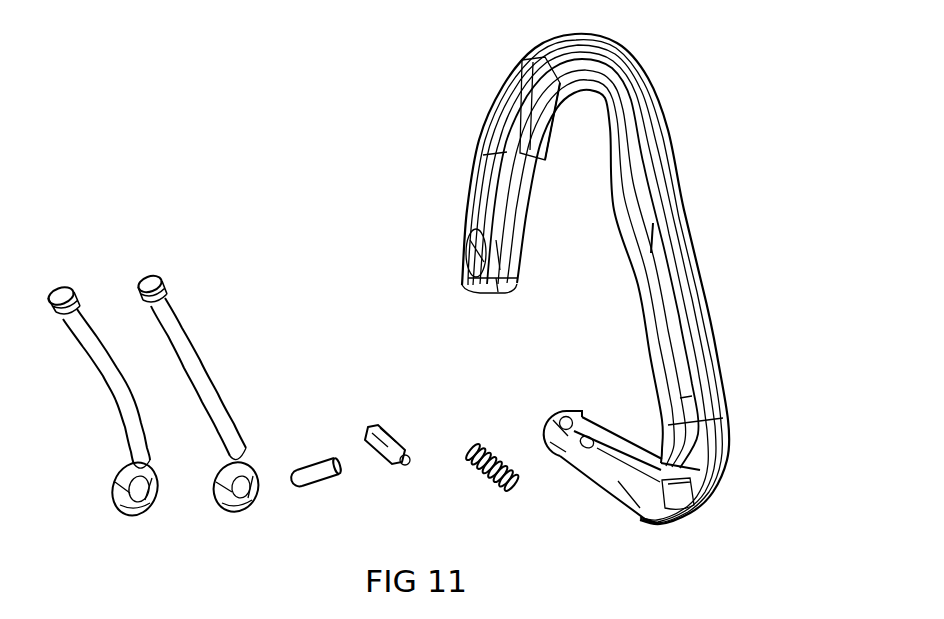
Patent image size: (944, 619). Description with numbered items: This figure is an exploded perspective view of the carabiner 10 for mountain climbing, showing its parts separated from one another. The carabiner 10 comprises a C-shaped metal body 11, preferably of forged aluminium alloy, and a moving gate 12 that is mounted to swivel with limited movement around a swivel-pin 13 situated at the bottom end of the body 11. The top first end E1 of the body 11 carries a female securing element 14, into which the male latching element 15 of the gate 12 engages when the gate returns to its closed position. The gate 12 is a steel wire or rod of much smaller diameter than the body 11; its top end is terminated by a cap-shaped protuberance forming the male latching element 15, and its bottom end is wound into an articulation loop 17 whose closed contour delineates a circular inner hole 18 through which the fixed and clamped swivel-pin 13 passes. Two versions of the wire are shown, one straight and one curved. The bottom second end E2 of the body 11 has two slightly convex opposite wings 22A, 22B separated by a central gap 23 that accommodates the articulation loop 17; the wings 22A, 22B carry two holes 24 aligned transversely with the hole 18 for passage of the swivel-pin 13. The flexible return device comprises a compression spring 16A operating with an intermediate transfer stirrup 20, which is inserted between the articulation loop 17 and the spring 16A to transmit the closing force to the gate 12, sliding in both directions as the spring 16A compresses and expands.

The carabiner 10 is at (267, 150).
The C-shaped metal body 11 is at (632, 80).
The moving gate 12 is at (192, 362).
The swivel-pin 13 is at (328, 462).
The female securing element 14 is at (477, 265).
The male latching element 15 is at (160, 283).
The compression spring 16A is at (513, 490).
The articulation loop 17 is at (230, 512).
The circular inner hole 18 is at (237, 460).
The intermediate transfer stirrup 20 is at (397, 463).
The wing 22A is at (547, 413).
The wing 22B is at (547, 427).
The central gap 23 is at (565, 413).
The holes 24 is at (588, 445).
The top first end E1 is at (510, 227).
The bottom second end E2 is at (595, 417).